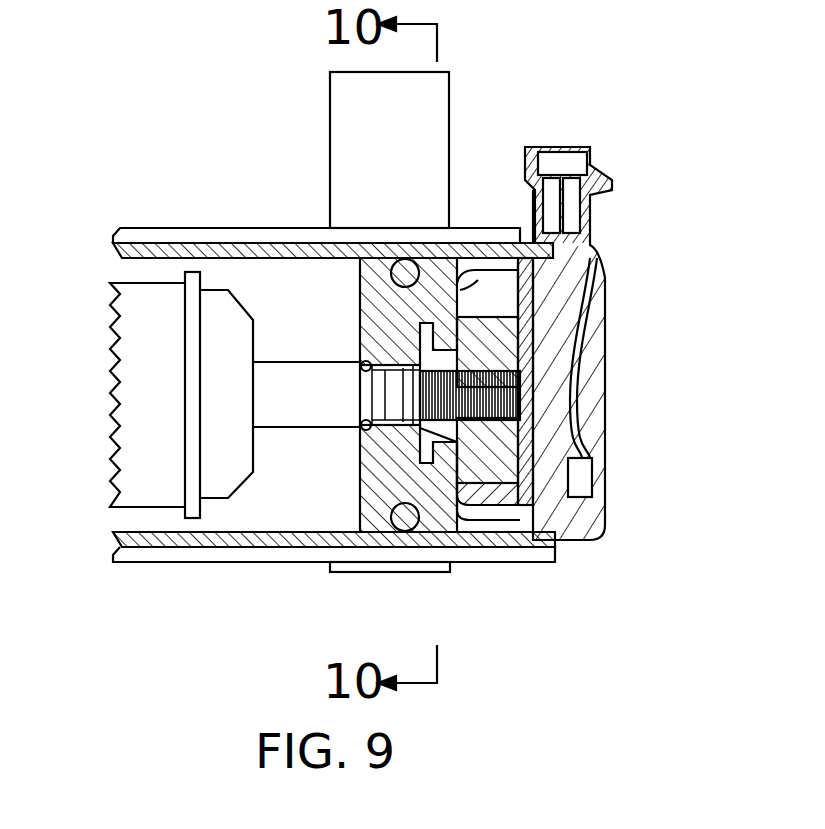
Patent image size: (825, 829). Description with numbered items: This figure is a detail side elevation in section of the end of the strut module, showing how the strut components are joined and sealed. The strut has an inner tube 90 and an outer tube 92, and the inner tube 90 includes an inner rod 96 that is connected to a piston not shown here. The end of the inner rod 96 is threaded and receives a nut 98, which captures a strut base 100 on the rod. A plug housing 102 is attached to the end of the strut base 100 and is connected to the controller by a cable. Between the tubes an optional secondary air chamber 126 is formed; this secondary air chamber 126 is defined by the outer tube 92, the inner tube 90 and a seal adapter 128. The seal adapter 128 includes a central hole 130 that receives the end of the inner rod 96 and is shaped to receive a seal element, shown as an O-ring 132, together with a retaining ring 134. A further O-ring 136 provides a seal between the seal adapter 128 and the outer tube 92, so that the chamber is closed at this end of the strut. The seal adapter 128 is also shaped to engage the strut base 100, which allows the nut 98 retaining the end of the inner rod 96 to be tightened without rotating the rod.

The inner tube 90 is at (172, 405).
The outer tube 92 is at (292, 540).
The inner rod 96 is at (278, 380).
The nut 98 is at (502, 480).
The strut base 100 is at (443, 517).
The plug housing 102 is at (603, 298).
The secondary air chamber 126 is at (233, 523).
The seal adapter 128 is at (362, 289).
The central hole 130 is at (360, 402).
The O-ring 132 is at (362, 354).
The retaining ring 134 is at (362, 429).
The O-ring 136 is at (405, 523).